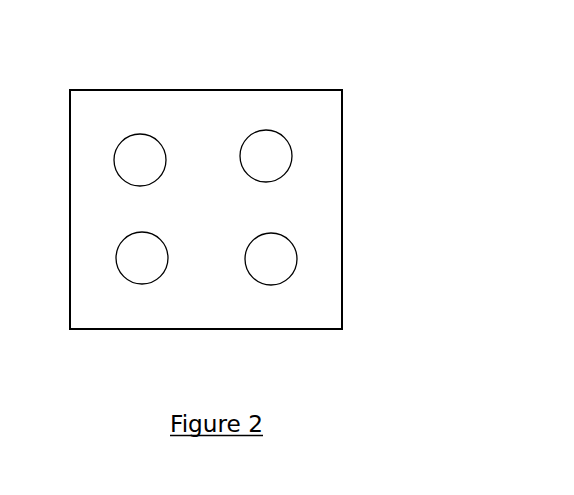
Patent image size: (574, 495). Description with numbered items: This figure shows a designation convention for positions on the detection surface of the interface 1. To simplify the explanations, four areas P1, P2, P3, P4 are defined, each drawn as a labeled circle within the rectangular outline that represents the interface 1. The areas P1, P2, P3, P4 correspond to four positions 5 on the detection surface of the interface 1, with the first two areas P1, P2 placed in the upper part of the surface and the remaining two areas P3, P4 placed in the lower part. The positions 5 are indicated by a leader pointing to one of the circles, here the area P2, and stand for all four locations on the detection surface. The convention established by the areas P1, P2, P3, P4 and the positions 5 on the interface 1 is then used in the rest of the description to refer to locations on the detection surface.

The interface 1 is at (205, 90).
The positions 5 is at (255, 207).
The area P1 is at (140, 160).
The area P2 is at (266, 156).
The area P3 is at (142, 258).
The area P4 is at (271, 259).